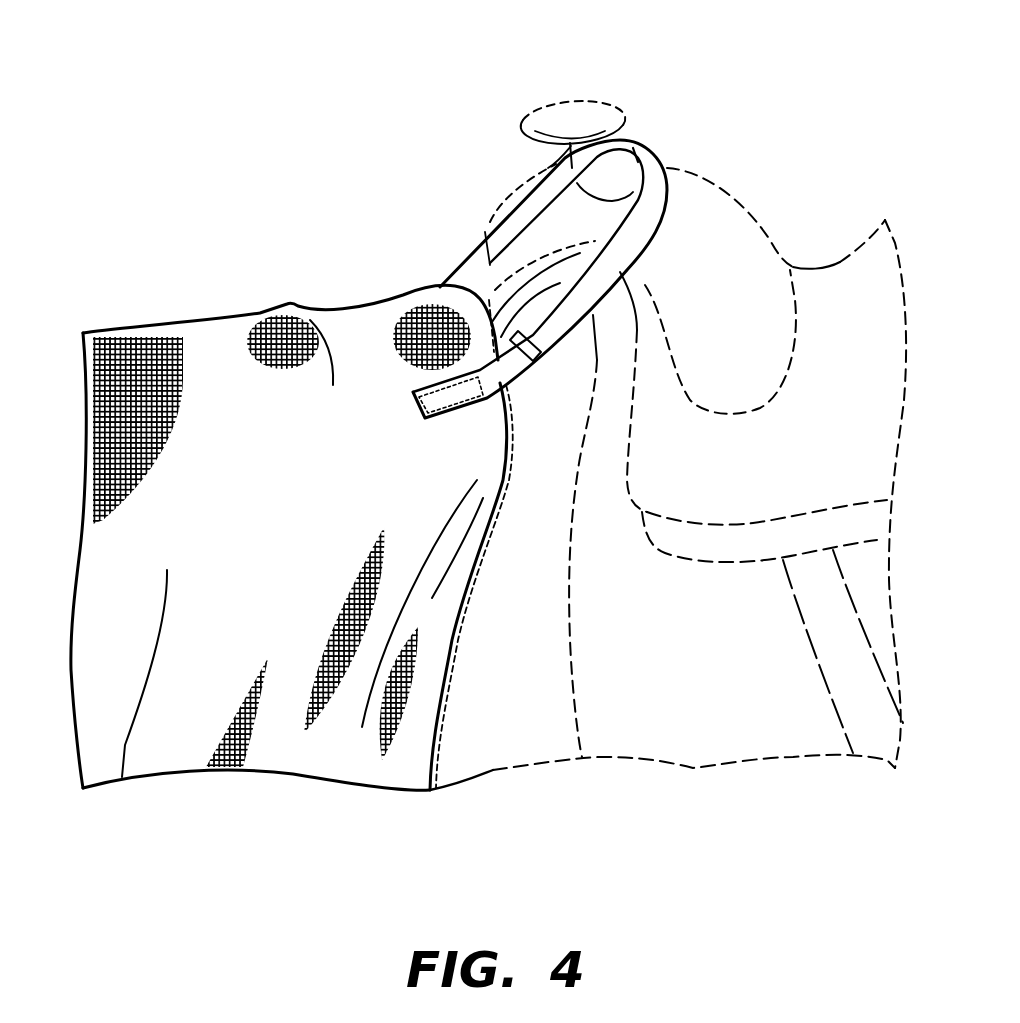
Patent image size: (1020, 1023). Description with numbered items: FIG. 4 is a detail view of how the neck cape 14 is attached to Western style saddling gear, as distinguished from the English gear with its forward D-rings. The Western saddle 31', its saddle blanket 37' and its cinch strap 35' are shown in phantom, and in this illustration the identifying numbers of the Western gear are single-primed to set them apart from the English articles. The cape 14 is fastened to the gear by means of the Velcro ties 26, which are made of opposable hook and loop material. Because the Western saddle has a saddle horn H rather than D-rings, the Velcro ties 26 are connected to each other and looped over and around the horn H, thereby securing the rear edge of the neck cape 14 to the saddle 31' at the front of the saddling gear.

The neck cape 14 is at (291, 521).
The Velcro tie 26 is at (656, 166).
The saddle horn H is at (577, 105).
The saddle 31' is at (776, 231).
The saddle blanket 37' is at (668, 505).
The cinch strap 35' is at (815, 651).